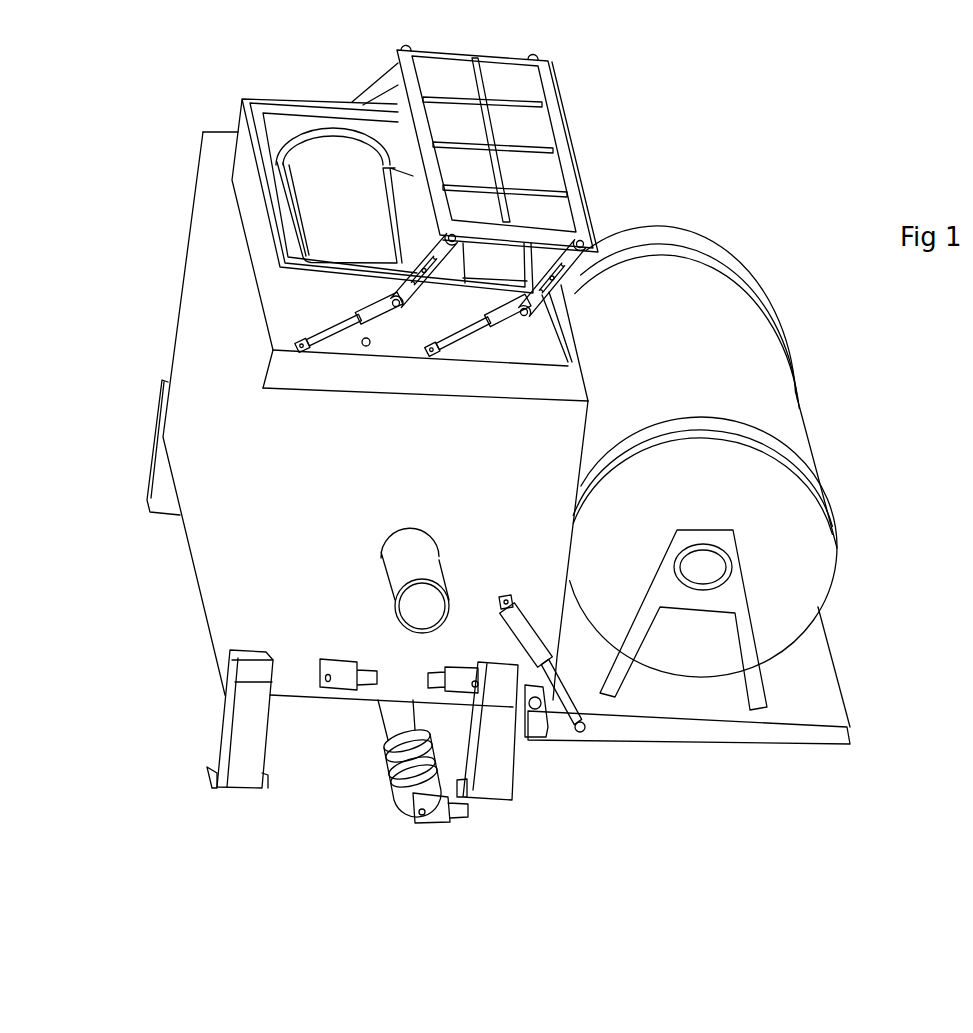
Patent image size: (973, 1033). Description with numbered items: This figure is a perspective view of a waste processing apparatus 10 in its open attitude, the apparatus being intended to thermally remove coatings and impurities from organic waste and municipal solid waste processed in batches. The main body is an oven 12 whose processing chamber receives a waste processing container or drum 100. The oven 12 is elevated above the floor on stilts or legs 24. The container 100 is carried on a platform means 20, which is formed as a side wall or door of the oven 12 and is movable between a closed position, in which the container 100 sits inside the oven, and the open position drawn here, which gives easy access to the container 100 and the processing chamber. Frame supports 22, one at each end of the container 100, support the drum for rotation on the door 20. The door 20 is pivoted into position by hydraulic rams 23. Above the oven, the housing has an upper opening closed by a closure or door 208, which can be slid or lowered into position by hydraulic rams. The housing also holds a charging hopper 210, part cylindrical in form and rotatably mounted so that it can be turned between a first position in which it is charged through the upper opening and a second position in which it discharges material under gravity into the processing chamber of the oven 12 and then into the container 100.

The apparatus 10 is at (797, 220).
The oven 12 is at (187, 300).
The platform means 20 is at (827, 698).
The frame supports 22 is at (737, 597).
The hydraulic rams 23 is at (527, 700).
The legs 24 is at (247, 720).
The container 100 is at (784, 402).
The door 208 is at (568, 145).
The charging hopper 210 is at (298, 152).